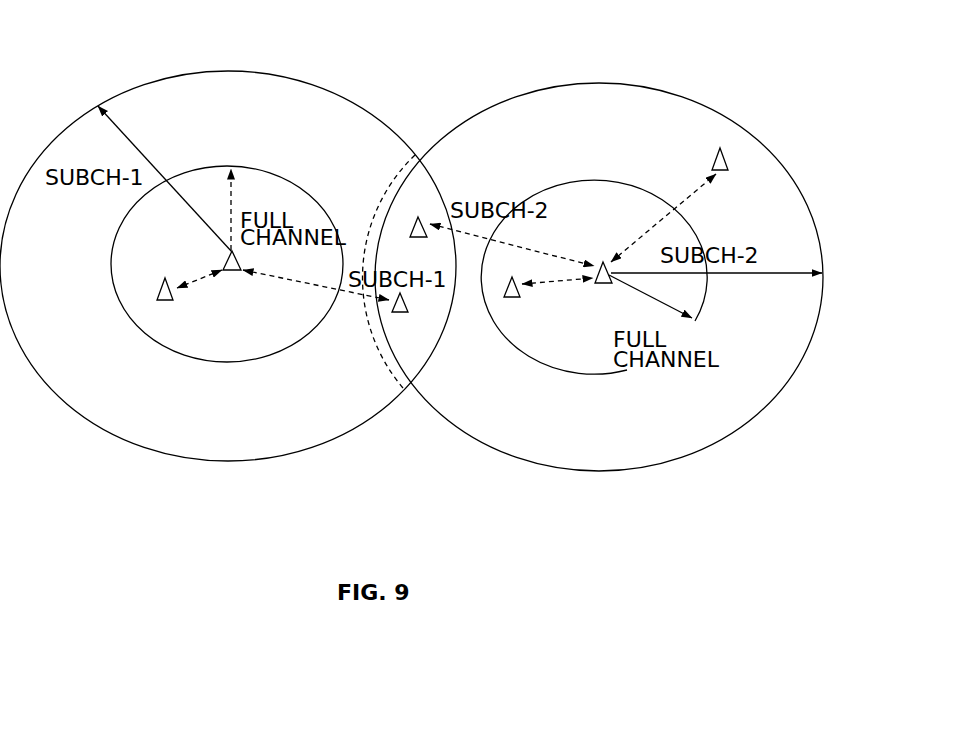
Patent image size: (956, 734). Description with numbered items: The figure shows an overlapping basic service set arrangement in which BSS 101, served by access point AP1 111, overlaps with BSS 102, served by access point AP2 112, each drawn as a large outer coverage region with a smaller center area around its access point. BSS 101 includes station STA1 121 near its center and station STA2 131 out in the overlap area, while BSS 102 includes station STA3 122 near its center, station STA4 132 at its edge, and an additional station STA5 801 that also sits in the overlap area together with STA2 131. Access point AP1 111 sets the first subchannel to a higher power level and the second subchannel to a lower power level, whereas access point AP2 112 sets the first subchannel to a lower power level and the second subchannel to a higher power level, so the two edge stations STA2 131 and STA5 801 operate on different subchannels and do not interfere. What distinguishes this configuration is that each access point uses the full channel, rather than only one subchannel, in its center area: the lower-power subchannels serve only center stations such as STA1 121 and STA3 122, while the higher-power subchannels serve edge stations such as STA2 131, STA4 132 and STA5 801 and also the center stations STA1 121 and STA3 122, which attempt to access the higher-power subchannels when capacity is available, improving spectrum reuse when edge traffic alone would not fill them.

The BSS 101 is at (237, 56).
The BSS 102 is at (587, 56).
The access point AP1 111 is at (227, 260).
The access point AP2 112 is at (603, 262).
The station STA1 121 is at (158, 296).
The station STA3 122 is at (511, 279).
The station STA2 131 is at (408, 303).
The station STA4 132 is at (722, 171).
The station STA5 801 is at (412, 232).